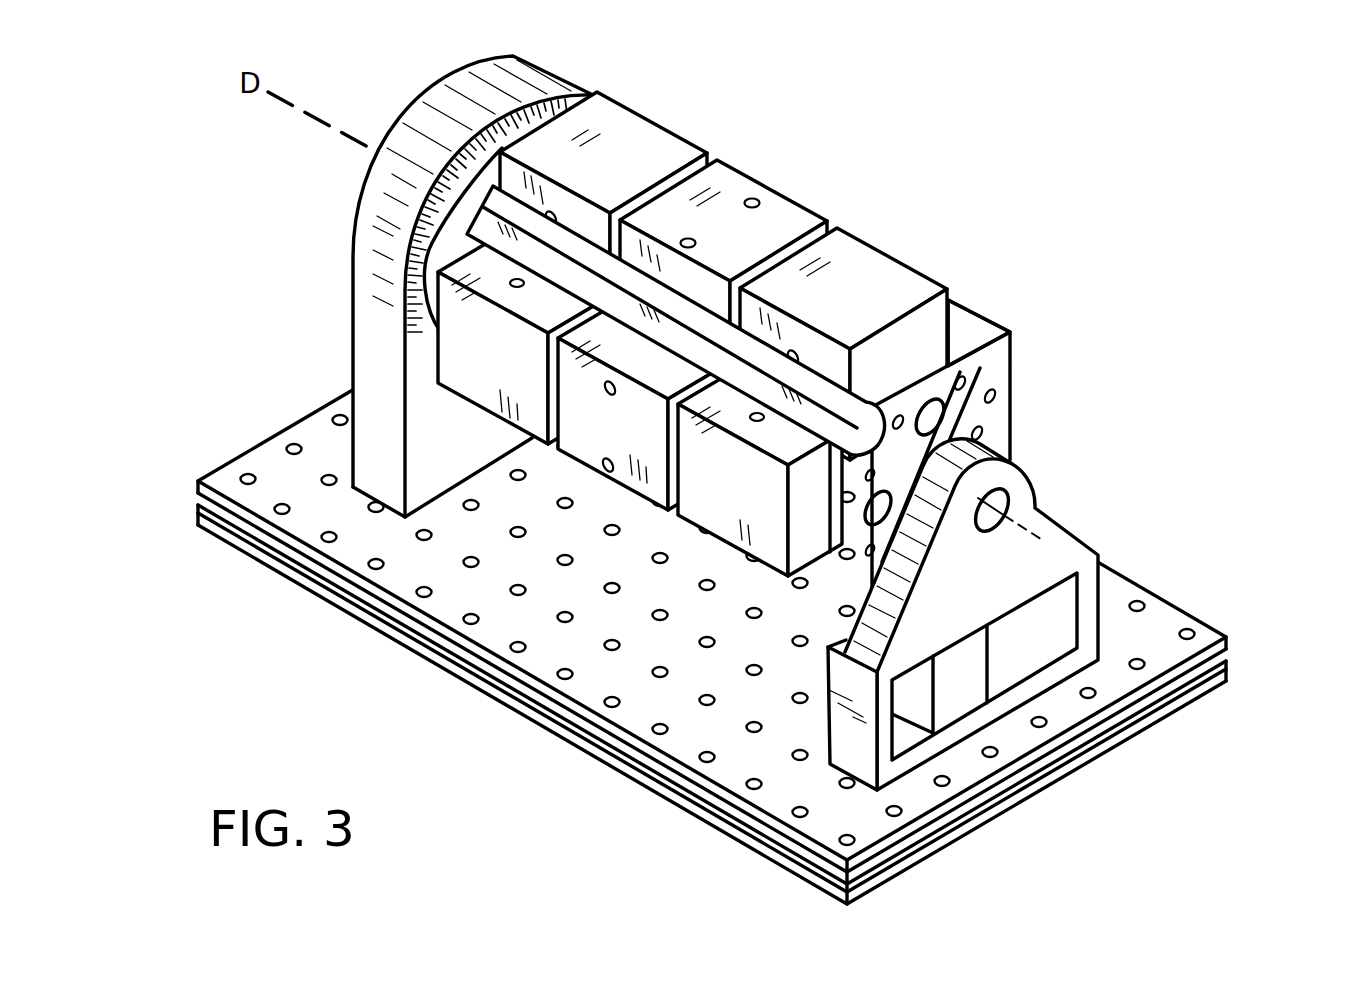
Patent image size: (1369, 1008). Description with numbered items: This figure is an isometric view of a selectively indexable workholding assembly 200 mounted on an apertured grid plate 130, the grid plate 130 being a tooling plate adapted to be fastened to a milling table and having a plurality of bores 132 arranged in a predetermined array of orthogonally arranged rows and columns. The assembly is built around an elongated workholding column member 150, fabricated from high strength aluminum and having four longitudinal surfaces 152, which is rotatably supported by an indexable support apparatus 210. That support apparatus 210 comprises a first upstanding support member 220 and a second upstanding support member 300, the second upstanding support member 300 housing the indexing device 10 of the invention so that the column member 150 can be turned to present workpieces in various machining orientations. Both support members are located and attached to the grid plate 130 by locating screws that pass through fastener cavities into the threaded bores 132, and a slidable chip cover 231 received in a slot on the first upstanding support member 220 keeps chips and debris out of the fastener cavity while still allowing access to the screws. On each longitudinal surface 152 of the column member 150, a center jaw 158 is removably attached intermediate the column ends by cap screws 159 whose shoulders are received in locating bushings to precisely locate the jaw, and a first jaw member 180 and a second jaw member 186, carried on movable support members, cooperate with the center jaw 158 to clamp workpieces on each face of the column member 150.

The indexing device 10 is at (728, 472).
The grid plate 130 is at (728, 589).
The bores 132 is at (326, 545).
The column member 150 is at (1002, 301).
The longitudinal surfaces 152 is at (1003, 333).
The center jaw 158 is at (715, 253).
The cap screws 159 is at (688, 238).
The first jaw member 180 is at (572, 181).
The second jaw member 186 is at (847, 311).
The workholding assembly 200 is at (1075, 598).
The indexable support apparatus 210 is at (1075, 638).
The first upstanding support member 220 is at (960, 591).
The chip cover 231 is at (1013, 650).
The second upstanding support member 300 is at (333, 322).